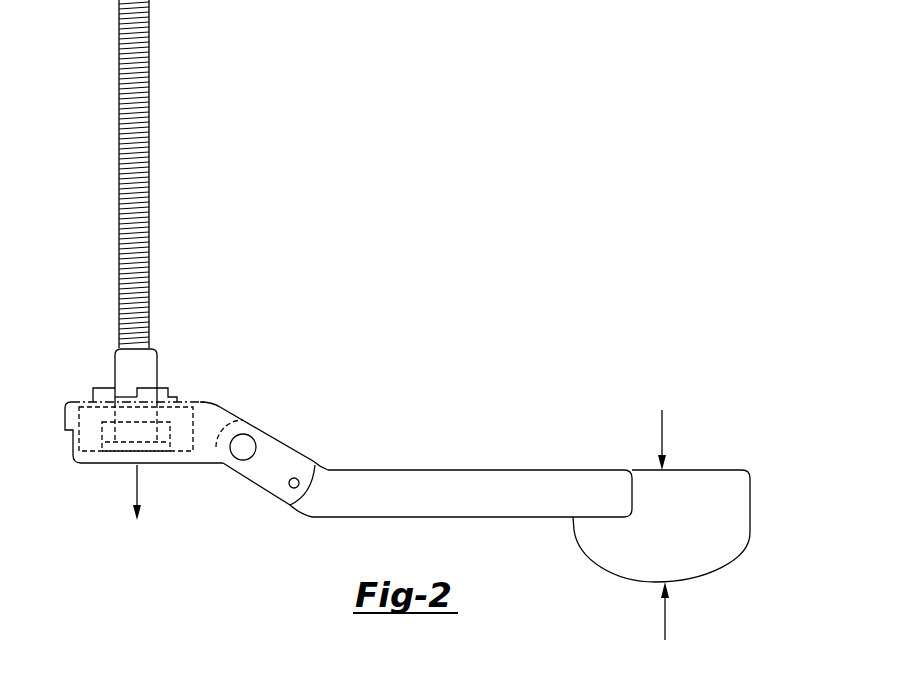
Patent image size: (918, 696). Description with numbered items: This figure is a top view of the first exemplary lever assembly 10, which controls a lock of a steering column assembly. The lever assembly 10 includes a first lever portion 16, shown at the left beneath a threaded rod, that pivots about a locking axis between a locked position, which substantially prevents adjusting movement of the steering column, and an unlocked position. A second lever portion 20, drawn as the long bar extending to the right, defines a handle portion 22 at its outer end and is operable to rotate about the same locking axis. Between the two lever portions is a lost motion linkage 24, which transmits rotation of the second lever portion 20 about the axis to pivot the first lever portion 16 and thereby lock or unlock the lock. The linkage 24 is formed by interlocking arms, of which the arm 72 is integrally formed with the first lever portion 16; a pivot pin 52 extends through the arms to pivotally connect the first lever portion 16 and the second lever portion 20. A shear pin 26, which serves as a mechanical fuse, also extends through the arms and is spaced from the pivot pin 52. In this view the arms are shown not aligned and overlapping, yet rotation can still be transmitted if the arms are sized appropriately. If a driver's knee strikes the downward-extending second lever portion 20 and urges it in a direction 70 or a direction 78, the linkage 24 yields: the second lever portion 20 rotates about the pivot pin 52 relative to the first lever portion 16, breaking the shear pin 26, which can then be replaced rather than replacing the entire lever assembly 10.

The lever assembly 10 is at (404, 172).
The first lever portion 16 is at (96, 491).
The second lever portion 20 is at (411, 462).
The handle portion 22 is at (715, 550).
The lost motion linkage 24 is at (318, 349).
The shear pin 26 is at (289, 483).
The pivot pin 52 is at (243, 447).
The direction 70 is at (662, 430).
The interlocking arm 72 is at (278, 462).
The direction 78 is at (665, 627).